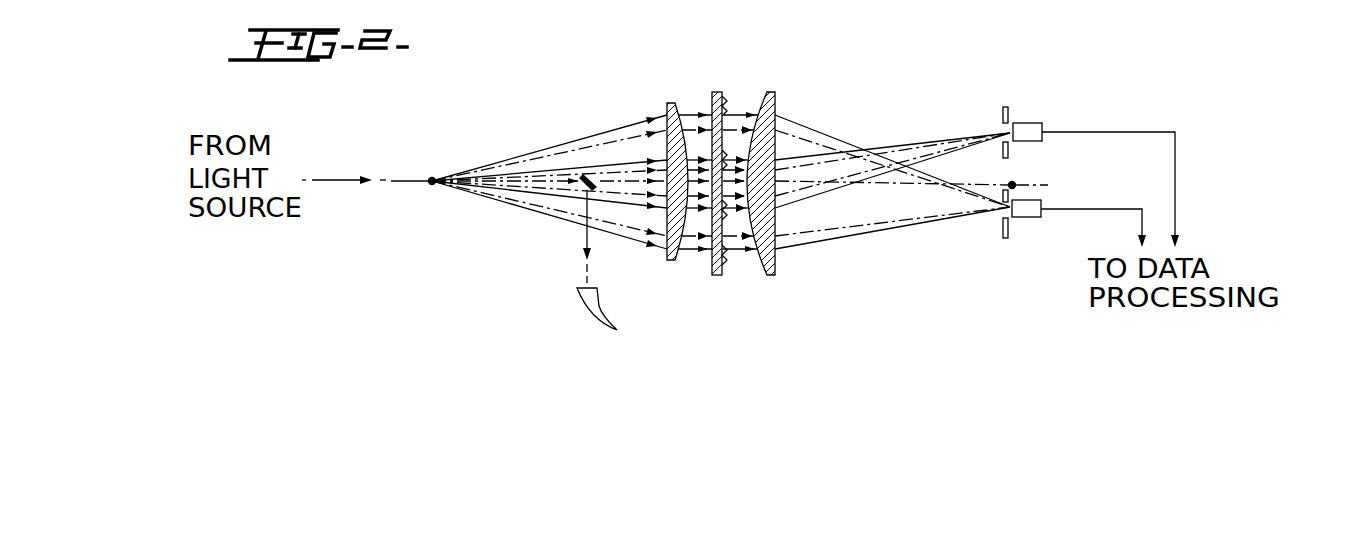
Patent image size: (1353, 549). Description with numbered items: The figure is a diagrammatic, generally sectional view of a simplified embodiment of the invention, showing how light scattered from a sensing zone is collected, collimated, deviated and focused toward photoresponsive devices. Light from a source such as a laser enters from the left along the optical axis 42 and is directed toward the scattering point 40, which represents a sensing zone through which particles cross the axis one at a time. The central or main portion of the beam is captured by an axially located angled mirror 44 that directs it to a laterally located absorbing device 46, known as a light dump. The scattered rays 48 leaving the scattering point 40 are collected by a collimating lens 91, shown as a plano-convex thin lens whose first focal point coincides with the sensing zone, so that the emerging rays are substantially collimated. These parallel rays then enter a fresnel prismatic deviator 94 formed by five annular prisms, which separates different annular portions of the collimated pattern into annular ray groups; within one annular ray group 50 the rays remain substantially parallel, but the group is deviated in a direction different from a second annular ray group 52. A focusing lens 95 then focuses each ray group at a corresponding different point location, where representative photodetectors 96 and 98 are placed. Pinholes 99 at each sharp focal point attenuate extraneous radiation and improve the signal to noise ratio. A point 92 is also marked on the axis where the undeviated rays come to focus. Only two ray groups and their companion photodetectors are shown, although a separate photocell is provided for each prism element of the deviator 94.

The scattering point 40 is at (433, 179).
The optical axis 42 is at (531, 186).
The angled mirror 44 is at (586, 192).
The absorbing device 46 is at (612, 319).
The scattered rays 48 is at (572, 139).
The annular ray group 50 is at (730, 118).
The second annular ray group 52 is at (890, 152).
The collimating lens 91 is at (672, 100).
The zero order focal point 92 is at (1015, 183).
The fresnel prismatic deviator 94 is at (716, 90).
The focusing lens 95 is at (773, 95).
The photodetector 96 is at (1024, 218).
The photodetector 98 is at (1030, 122).
The pinholes 99 is at (1002, 120).